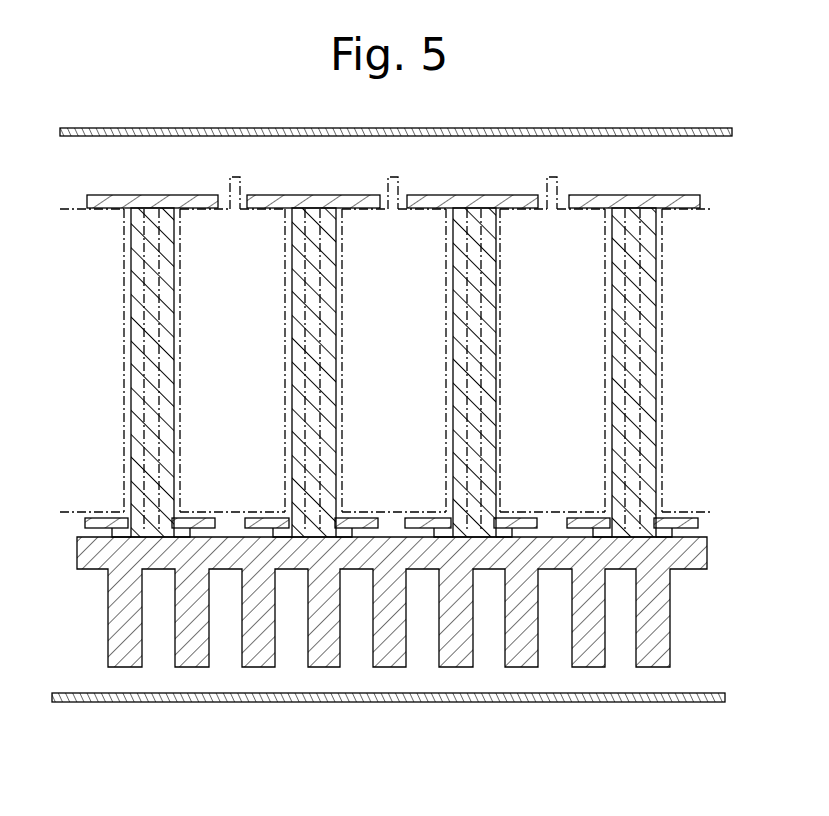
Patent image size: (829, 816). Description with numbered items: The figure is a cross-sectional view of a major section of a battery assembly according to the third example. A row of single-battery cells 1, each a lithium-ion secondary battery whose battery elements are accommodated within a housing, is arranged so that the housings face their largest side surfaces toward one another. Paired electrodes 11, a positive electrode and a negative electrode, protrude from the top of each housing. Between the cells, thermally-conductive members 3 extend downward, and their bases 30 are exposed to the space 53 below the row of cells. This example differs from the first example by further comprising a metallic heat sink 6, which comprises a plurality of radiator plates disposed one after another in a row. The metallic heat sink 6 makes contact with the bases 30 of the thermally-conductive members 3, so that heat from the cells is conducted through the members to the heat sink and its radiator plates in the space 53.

The single-battery cell 1 is at (400, 343).
The thermally-conductive member 3 is at (645, 367).
The paired electrodes 11 is at (553, 177).
The base 30 is at (667, 511).
The metallic heat sink 6 is at (660, 635).
The space 53 is at (92, 663).